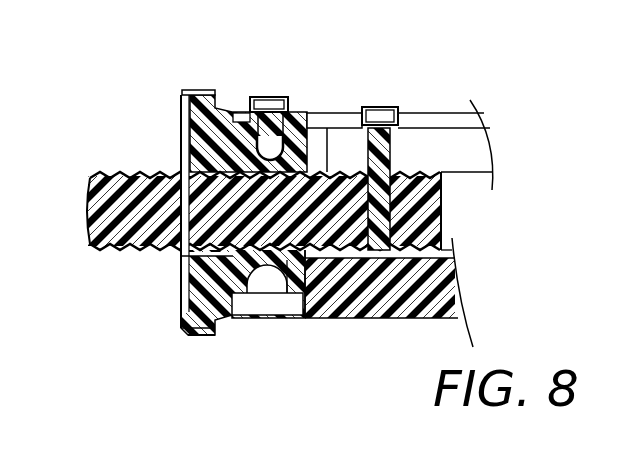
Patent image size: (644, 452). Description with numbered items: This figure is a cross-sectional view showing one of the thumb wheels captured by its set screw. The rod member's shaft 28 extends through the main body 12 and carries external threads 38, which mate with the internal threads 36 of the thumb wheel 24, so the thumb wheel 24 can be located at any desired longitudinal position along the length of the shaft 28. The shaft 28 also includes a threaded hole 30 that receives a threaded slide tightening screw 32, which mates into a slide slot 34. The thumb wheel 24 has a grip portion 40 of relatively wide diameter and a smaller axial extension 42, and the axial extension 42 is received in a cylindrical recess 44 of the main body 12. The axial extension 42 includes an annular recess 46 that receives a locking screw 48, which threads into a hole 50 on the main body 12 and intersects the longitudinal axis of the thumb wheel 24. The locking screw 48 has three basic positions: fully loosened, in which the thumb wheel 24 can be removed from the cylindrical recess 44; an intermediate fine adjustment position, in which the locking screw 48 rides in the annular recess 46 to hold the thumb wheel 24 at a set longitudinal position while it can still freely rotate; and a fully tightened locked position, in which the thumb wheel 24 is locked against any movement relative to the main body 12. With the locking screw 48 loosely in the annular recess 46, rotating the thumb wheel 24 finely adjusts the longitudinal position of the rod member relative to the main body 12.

The main body 12 is at (412, 112).
The thumb wheel 24 is at (178, 107).
The shaft 28 is at (135, 233).
The threaded hole 30 is at (392, 258).
The slide tightening screw 32 is at (393, 152).
The slide slot 34 is at (328, 140).
The internal threads 36 is at (313, 258).
The external threads 38 is at (120, 172).
The grip portion 40 is at (194, 338).
The axial extension 42 is at (287, 290).
The cylindrical recess 44 is at (243, 273).
The annular recess 46 is at (268, 285).
The locking screw 48 is at (253, 96).
The hole 50 is at (182, 93).